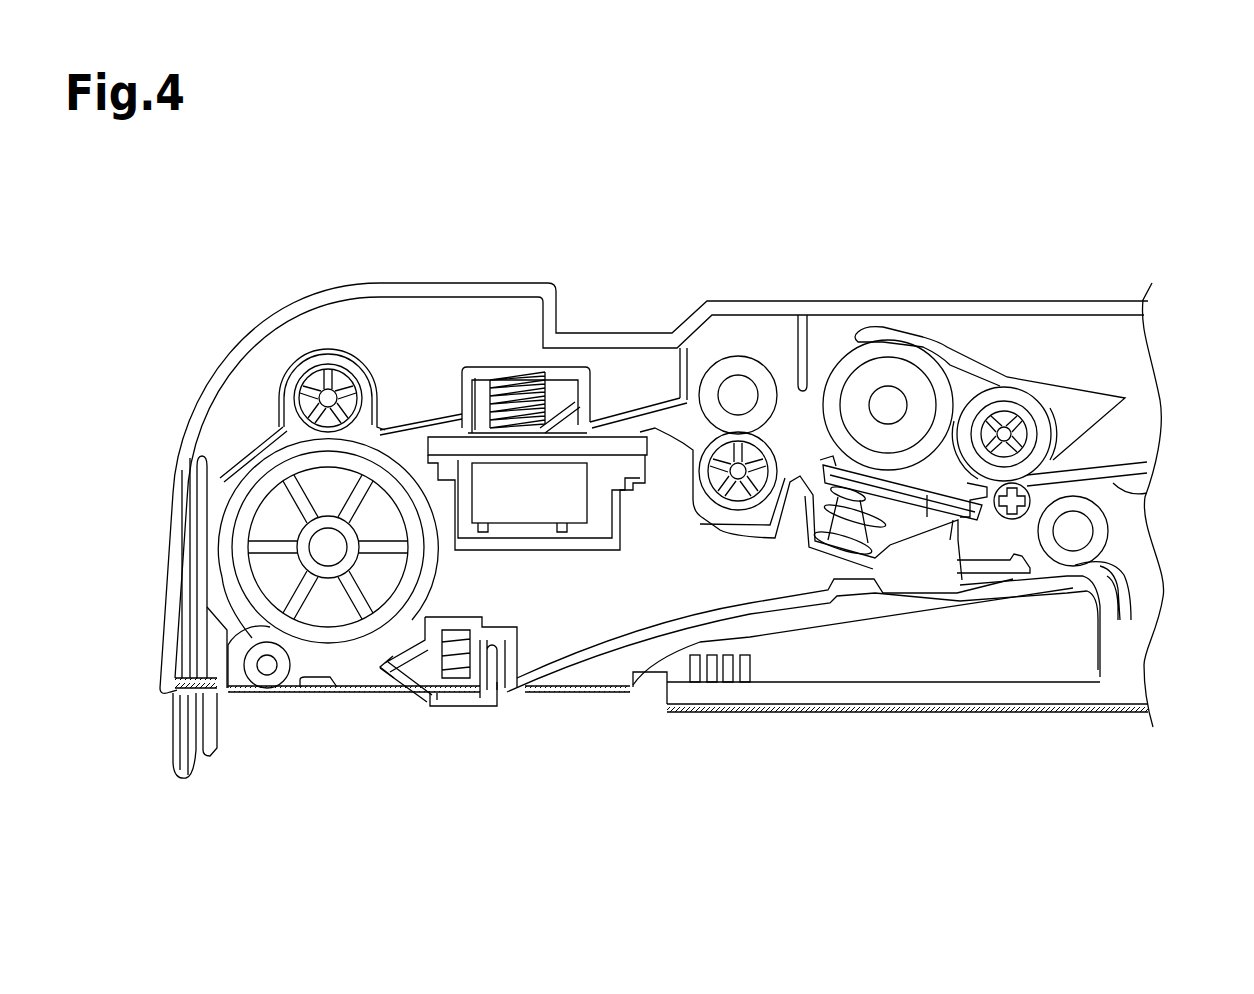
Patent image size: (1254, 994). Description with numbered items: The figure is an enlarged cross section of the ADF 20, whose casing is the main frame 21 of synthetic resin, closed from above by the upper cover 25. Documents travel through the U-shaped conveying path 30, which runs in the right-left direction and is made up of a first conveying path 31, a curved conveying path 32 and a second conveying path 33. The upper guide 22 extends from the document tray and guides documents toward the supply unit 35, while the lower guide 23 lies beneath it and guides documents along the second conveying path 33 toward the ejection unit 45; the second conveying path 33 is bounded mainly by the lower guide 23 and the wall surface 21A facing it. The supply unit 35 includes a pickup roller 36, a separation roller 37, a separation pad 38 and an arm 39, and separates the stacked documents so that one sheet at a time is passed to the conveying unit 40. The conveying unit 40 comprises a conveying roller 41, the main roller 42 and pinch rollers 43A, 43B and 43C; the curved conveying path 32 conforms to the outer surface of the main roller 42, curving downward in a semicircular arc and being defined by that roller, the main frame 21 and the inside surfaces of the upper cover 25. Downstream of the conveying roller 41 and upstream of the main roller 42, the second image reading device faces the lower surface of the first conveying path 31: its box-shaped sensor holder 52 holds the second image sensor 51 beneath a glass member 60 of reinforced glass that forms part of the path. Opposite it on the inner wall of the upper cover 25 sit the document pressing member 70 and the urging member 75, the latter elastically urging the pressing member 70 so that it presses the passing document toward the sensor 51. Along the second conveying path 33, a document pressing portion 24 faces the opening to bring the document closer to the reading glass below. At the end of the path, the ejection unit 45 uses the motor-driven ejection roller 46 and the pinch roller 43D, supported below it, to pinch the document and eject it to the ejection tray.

The ADF 20 is at (463, 193).
The main frame 21 is at (168, 608).
The wall surface 21A is at (795, 632).
The upper guide 22 is at (1147, 498).
The lower guide 23 is at (713, 607).
The document pressing portion 24 is at (455, 703).
The upper cover 25 is at (225, 360).
The U-shaped conveying path 30 is at (1087, 460).
The first conveying path 31 is at (630, 435).
The curved conveying path 32 is at (200, 500).
The second conveying path 33 is at (676, 641).
The supply unit 35 is at (969, 325).
The pickup roller 36 is at (1010, 400).
The separation roller 37 is at (843, 360).
The separation pad 38 is at (855, 482).
The arm 39 is at (886, 386).
The conveying unit 40 is at (272, 440).
The conveying roller 41 is at (740, 358).
The main roller 42 is at (245, 515).
The pinch roller 43A is at (768, 458).
The pinch roller 43B is at (330, 362).
The pinch roller 43C is at (265, 690).
The pinch roller 43D is at (1133, 620).
The ejection unit 45 is at (1123, 564).
The ejection roller 46 is at (1100, 536).
The second image sensor 51 is at (530, 510).
The sensor holder 52 is at (497, 548).
The glass member 60 is at (607, 443).
The document pressing member 70 is at (462, 394).
The urging member 75 is at (537, 367).